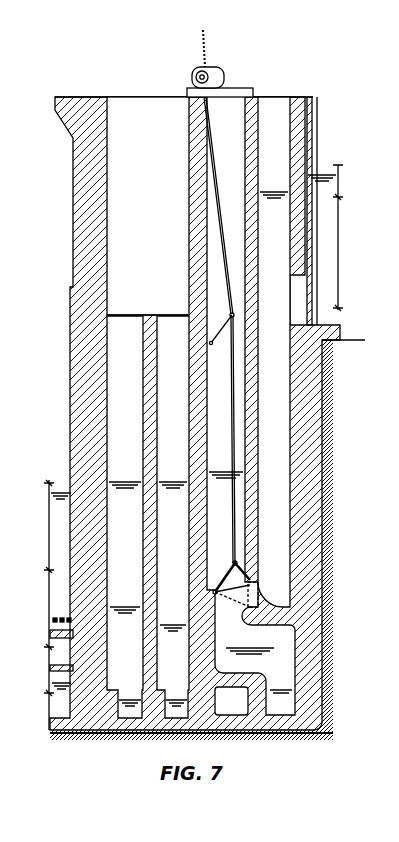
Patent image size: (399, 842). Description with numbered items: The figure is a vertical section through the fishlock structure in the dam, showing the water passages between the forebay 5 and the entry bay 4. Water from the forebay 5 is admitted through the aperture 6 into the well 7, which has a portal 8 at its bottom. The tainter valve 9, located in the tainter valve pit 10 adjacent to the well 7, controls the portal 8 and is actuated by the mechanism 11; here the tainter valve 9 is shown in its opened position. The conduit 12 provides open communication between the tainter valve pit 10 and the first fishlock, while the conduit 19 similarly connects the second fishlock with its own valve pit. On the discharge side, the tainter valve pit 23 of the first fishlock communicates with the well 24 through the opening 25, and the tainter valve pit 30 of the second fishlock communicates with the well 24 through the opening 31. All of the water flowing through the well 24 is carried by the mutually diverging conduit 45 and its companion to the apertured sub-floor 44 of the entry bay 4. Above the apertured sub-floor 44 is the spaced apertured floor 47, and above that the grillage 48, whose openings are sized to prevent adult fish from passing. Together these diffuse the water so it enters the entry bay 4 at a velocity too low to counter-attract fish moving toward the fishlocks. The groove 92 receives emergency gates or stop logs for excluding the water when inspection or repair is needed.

The entry bay 4 is at (57, 605).
The forebay 5 is at (325, 237).
The aperture 6 is at (297, 316).
The well 7 is at (274, 352).
The portal 8 is at (262, 604).
The tainter valve 9 is at (231, 571).
The tainter valve pit 10 is at (251, 406).
The mechanism 11 is at (216, 68).
The conduit 12 is at (255, 670).
The conduit 19 is at (231, 701).
The tainter valve pit 23 is at (125, 517).
The well 24 is at (148, 206).
The opening 25 is at (130, 705).
The tainter valve pit 30 is at (173, 517).
The opening 31 is at (178, 705).
The apertured sub-floor 44 is at (68, 662).
The conduit 45 is at (57, 698).
The apertured floor 47 is at (68, 636).
The grillage 48 is at (60, 617).
The groove 92 is at (309, 97).